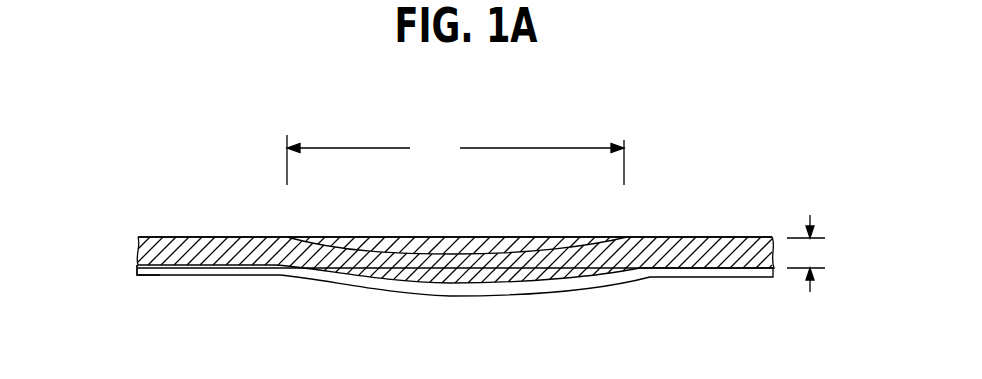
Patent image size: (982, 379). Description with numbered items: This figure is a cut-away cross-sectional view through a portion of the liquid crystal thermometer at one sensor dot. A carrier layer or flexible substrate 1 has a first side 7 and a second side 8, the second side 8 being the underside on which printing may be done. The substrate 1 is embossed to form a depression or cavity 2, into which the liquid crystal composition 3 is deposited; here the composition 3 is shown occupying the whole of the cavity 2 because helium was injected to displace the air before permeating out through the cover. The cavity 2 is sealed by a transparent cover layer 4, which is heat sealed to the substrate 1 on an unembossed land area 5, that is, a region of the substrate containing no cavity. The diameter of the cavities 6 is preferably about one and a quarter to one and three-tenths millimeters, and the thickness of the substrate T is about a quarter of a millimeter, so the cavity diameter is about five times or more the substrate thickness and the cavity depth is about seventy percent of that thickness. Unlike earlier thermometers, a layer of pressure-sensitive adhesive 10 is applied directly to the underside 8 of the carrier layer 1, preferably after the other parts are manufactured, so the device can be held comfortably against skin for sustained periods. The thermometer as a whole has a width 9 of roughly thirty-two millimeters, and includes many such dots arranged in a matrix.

The flexible substrate 1 is at (138, 250).
The cavity 2 is at (357, 247).
The liquid crystal composition 3 is at (398, 247).
The transparent cover layer 4 is at (490, 237).
The unembossed land area 5 is at (688, 237).
The diameter of the cavities 6 is at (455, 160).
The first side 7 is at (228, 237).
The second side 8 is at (223, 268).
The width 9 is at (178, 247).
The pressure-sensitive adhesive 10 is at (137, 268).
The thickness of the substrate T is at (820, 253).